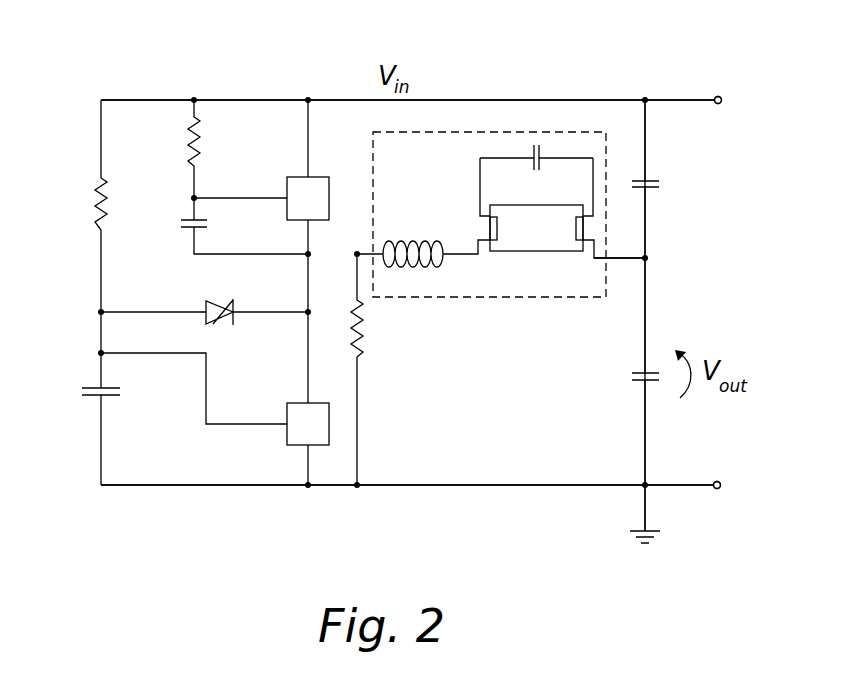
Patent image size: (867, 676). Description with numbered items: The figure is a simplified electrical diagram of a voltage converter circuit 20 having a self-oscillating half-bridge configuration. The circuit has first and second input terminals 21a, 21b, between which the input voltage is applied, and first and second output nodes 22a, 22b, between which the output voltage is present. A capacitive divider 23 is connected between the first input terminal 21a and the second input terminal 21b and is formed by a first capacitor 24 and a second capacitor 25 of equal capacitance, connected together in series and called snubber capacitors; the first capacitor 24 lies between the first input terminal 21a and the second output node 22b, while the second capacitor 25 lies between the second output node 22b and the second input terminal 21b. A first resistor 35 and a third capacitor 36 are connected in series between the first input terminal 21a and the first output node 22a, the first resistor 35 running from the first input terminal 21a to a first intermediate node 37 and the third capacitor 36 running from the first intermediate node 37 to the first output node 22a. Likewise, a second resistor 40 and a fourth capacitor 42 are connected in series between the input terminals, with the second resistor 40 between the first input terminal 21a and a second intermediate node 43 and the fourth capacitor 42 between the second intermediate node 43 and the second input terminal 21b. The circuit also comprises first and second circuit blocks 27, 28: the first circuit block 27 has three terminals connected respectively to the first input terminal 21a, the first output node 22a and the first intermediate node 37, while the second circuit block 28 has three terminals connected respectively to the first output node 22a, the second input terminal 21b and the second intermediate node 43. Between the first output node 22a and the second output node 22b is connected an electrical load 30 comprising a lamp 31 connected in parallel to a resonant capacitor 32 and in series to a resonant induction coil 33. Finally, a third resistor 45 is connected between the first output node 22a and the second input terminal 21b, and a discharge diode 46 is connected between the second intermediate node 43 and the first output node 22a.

The voltage converter circuit 20 is at (356, 525).
The first input terminal 21a is at (718, 96).
The second input terminal 21b is at (720, 481).
The first output node 22a is at (306, 257).
The second output node 22b is at (648, 259).
The capacitive divider 23 is at (679, 207).
The first capacitor 24 is at (652, 180).
The second capacitor 25 is at (636, 383).
The first circuit block 27 is at (296, 187).
The second circuit block 28 is at (297, 432).
The electrical load 30 is at (458, 131).
The lamp 31 is at (533, 242).
The resonant capacitor 32 is at (542, 150).
The resonant induction coil 33 is at (426, 245).
The first resistor 35 is at (190, 157).
The third capacitor 36 is at (188, 232).
The first intermediate node 37 is at (190, 198).
The second resistor 40 is at (98, 222).
The fourth capacitor 42 is at (90, 398).
The second intermediate node 43 is at (98, 353).
The third resistor 45 is at (365, 335).
The discharge diode 46 is at (220, 320).